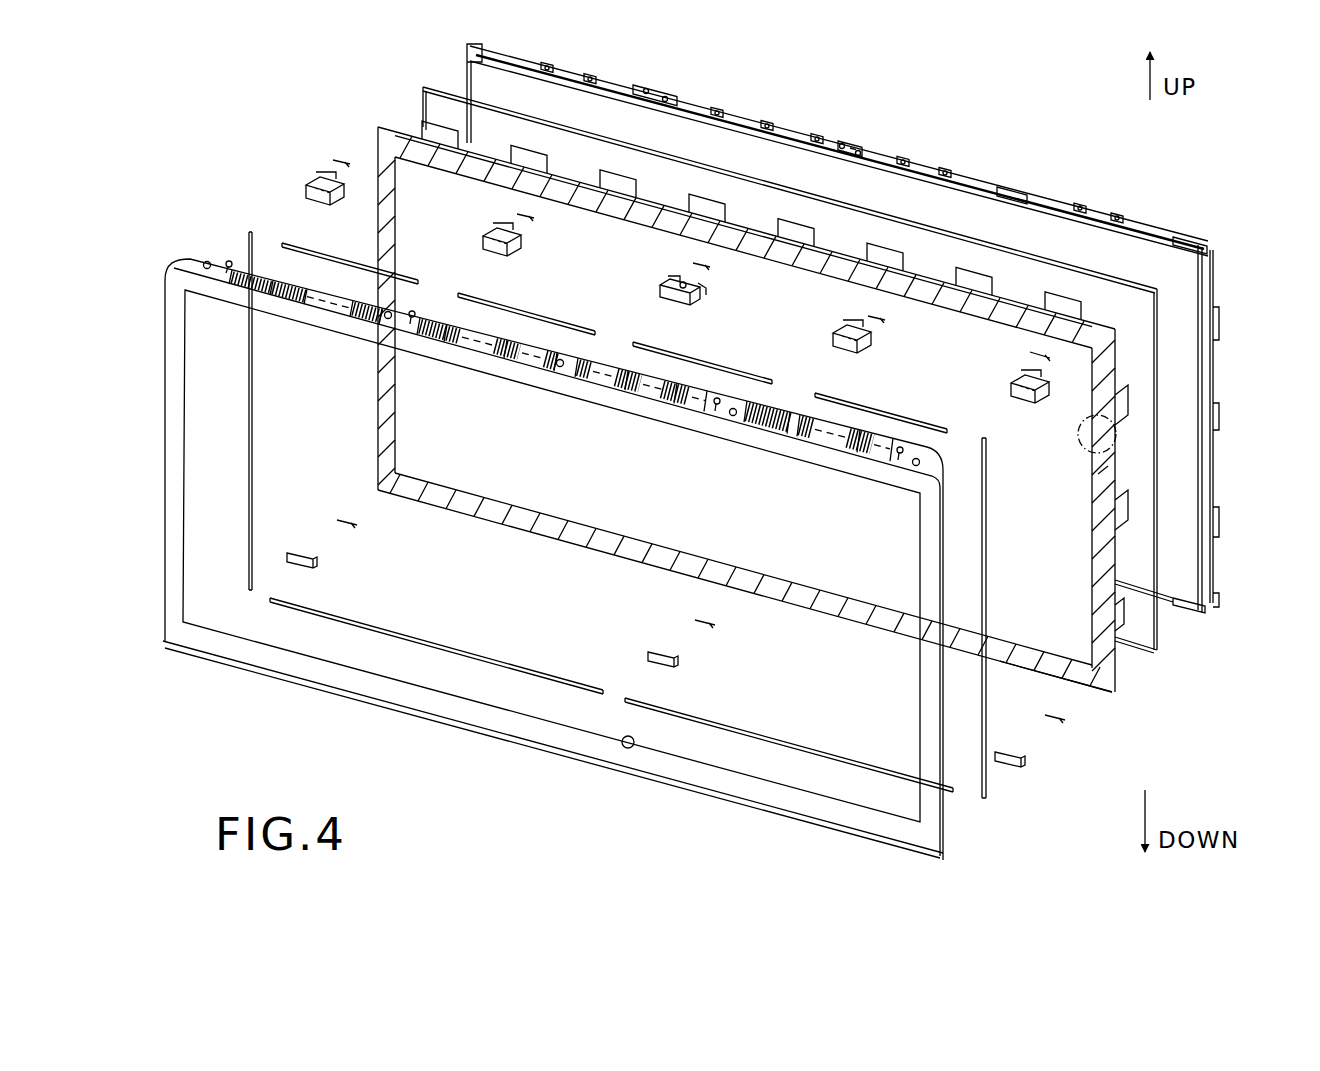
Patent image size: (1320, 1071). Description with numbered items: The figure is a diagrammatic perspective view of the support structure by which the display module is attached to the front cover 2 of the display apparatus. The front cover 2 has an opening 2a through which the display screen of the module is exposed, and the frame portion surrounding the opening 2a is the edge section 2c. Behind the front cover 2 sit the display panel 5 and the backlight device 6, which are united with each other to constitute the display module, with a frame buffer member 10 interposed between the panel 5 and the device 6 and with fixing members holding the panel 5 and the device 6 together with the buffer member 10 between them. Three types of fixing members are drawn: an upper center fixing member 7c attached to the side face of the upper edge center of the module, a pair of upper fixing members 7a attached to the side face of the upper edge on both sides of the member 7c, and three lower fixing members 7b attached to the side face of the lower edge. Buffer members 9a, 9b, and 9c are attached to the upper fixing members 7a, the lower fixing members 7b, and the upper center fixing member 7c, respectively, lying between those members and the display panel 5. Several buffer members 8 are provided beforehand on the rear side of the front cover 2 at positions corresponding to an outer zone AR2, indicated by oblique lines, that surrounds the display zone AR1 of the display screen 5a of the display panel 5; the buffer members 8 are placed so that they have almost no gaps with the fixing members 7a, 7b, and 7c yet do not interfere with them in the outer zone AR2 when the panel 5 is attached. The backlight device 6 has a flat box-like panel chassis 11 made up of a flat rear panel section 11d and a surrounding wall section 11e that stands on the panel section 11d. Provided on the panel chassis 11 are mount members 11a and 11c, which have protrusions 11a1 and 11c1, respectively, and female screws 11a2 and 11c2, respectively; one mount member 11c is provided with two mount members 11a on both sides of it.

The front cover 2 is at (293, 668).
The opening 2a is at (626, 750).
The edge section 2c is at (724, 787).
The display panel 5 is at (1113, 668).
The display screen 5a is at (1067, 623).
The backlight device 6 is at (1228, 538).
The upper fixing members 7a is at (308, 186).
The lower fixing members 7b is at (316, 566).
The upper center fixing member 7c is at (667, 292).
The buffer members 8 is at (318, 251).
The buffer members 9a is at (348, 162).
The buffer members 9b is at (350, 525).
The buffer member 9c is at (710, 268).
The frame buffer member 10 is at (1160, 632).
The panel chassis 11 is at (1153, 234).
The mount members 11a is at (566, 60).
The protrusion 11a1 is at (660, 92).
The female screw 11a2 is at (646, 89).
The mount member 11c is at (892, 147).
The protrusion 11c1 is at (834, 143).
The female screw 11c2 is at (851, 151).
The rear panel section 11d is at (1088, 192).
The surrounding wall section 11e is at (1214, 286).
The display zone AR1 is at (1133, 428).
The outer zone AR2 is at (1102, 470).